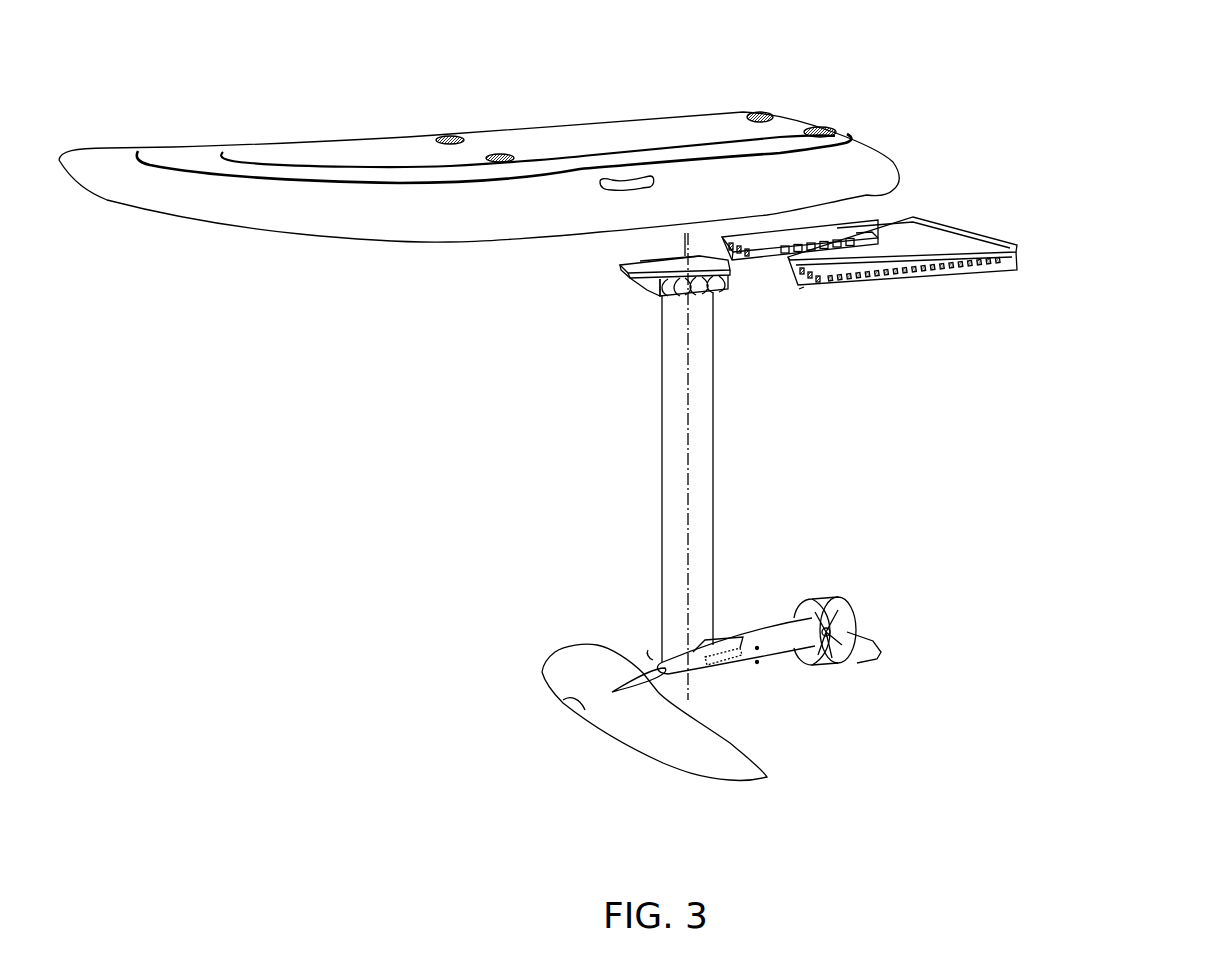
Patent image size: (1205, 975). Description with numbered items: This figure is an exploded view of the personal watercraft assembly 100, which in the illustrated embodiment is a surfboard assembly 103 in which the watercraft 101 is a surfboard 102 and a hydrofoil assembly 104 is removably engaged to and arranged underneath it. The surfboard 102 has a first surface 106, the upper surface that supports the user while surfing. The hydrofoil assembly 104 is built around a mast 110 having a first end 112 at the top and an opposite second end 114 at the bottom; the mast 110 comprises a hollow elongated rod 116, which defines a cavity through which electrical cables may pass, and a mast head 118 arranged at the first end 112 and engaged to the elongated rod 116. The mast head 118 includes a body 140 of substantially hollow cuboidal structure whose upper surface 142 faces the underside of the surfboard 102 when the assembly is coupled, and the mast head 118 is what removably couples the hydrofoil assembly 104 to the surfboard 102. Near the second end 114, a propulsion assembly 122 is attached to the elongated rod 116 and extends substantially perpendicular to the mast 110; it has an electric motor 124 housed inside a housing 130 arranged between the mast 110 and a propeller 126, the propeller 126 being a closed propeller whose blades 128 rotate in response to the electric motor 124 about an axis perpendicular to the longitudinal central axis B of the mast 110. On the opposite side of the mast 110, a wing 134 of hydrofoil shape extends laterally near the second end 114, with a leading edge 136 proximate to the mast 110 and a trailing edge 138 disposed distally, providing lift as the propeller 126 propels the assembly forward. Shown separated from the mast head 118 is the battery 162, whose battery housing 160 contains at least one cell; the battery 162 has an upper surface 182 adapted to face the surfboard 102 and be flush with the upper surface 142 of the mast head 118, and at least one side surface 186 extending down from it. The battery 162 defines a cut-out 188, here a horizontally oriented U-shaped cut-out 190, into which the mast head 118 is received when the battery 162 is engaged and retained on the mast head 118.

The personal watercraft assembly 100 is at (1078, 107).
The watercraft 101 is at (304, 149).
The surfboard 102 is at (399, 149).
The surfboard assembly 103 is at (973, 67).
The hydrofoil assembly 104 is at (758, 460).
The first surface 106 is at (590, 158).
The mast 110 is at (716, 400).
The first end 112 is at (620, 265).
The second end 114 is at (661, 653).
The hollow elongated rod 116 is at (678, 445).
The mast head 118 is at (636, 292).
The propulsion assembly 122 is at (792, 653).
The electric motor 124 is at (743, 668).
The propeller 126 is at (828, 594).
The blades 128 is at (852, 667).
The housing 130 is at (775, 633).
The wing 134 is at (563, 700).
The leading edge 136 is at (645, 758).
The trailing edge 138 is at (752, 763).
The body 140 is at (726, 298).
The upper surface 142 is at (667, 256).
The battery housing 160 is at (827, 237).
The battery 162 is at (953, 284).
The upper surface 182 is at (927, 253).
The side surface 186 is at (800, 290).
The cut-out 188 is at (853, 239).
The U-shaped cut-out 190 is at (792, 240).
The longitudinal central axis B is at (688, 692).